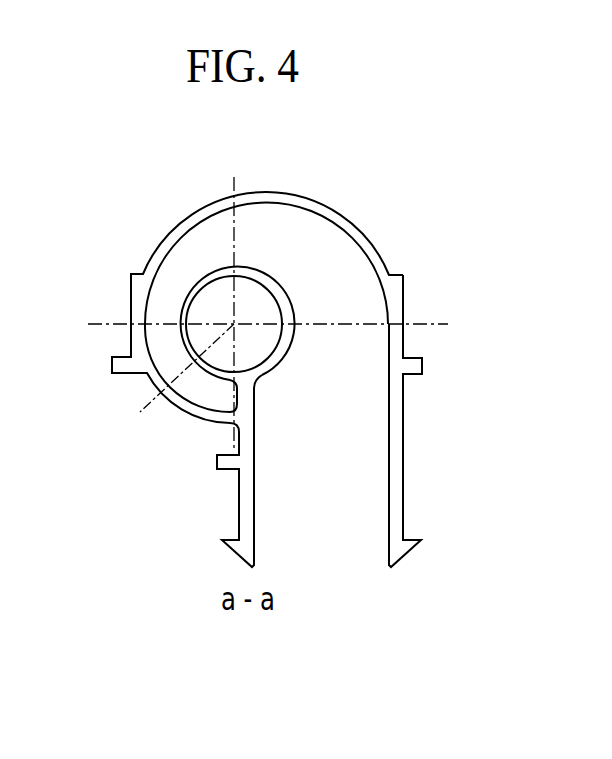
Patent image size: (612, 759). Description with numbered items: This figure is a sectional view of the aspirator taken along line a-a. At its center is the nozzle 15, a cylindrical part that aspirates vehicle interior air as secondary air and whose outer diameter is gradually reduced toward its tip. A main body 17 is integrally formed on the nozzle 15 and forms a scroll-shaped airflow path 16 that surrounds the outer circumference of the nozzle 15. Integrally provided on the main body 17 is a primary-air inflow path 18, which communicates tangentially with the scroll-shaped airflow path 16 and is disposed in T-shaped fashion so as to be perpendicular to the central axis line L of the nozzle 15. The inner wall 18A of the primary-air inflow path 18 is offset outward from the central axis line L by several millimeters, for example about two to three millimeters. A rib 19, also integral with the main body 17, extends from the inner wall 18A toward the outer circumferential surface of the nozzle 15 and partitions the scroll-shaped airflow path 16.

The nozzle 15 is at (198, 283).
The scroll-shaped airflow path 16 is at (292, 238).
The main body 17 is at (345, 228).
The primary-air inflow path 18 is at (397, 499).
The inner wall 18A is at (247, 442).
The rib 19 is at (247, 397).
The central axis line L is at (177, 377).